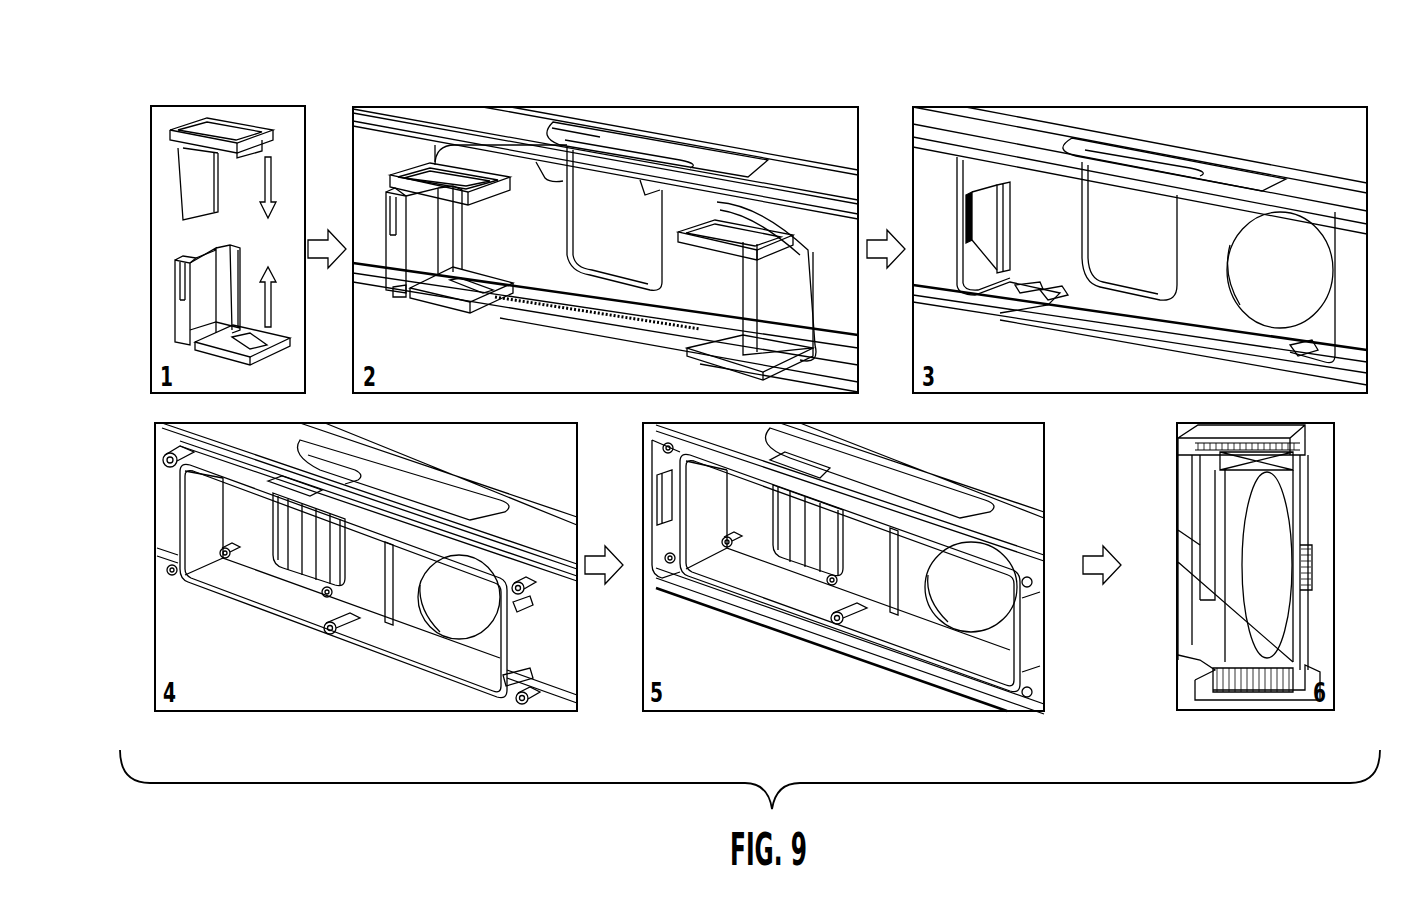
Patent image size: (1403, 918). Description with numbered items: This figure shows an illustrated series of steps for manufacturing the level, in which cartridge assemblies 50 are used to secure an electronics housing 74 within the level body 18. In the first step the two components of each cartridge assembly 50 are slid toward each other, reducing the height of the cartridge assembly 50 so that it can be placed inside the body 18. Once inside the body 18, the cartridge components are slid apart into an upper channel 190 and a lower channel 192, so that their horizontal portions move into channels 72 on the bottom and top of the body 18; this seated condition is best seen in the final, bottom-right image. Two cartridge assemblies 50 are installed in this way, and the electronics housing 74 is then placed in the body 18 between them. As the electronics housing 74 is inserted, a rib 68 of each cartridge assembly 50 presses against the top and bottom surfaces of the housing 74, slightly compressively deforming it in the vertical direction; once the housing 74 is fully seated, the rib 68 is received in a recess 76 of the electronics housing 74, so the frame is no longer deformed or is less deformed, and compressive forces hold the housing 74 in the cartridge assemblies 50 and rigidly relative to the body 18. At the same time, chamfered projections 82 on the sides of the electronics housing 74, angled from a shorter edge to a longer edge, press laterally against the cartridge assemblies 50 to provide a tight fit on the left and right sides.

The cartridge assembly 50 is at (223, 84).
The body 18 is at (523, 131).
The upper channel 190 is at (633, 193).
The channel 72 is at (582, 297).
The lower channel 192 is at (648, 321).
The rib 68 is at (1306, 355).
The electronics housing 74 is at (213, 609).
The chamfered projection 82 is at (506, 616).
The recess 76 is at (1261, 464).